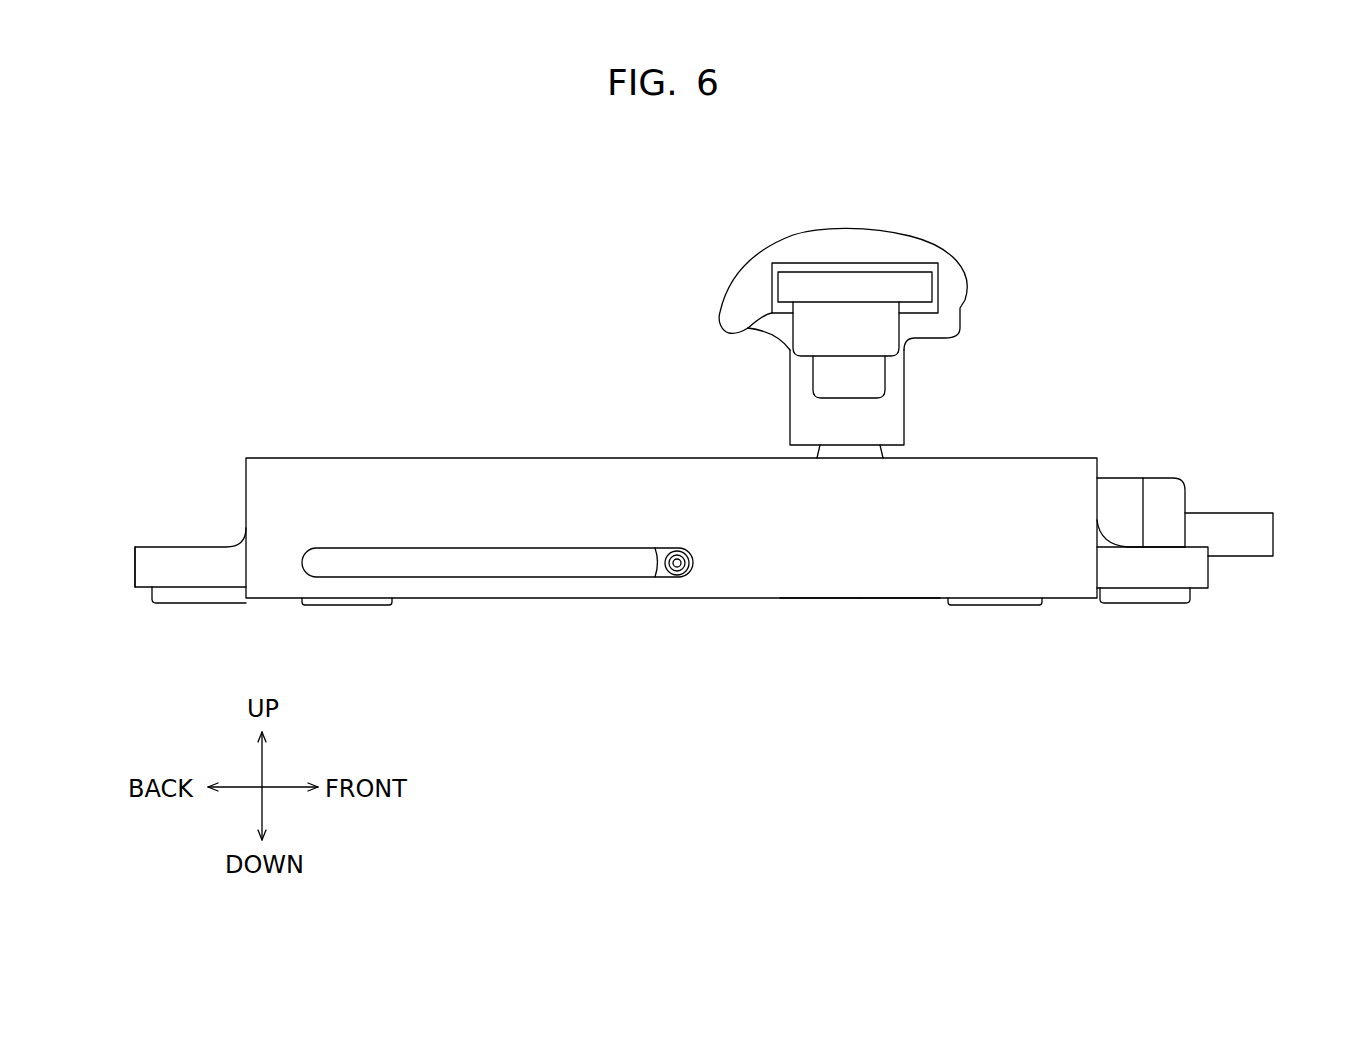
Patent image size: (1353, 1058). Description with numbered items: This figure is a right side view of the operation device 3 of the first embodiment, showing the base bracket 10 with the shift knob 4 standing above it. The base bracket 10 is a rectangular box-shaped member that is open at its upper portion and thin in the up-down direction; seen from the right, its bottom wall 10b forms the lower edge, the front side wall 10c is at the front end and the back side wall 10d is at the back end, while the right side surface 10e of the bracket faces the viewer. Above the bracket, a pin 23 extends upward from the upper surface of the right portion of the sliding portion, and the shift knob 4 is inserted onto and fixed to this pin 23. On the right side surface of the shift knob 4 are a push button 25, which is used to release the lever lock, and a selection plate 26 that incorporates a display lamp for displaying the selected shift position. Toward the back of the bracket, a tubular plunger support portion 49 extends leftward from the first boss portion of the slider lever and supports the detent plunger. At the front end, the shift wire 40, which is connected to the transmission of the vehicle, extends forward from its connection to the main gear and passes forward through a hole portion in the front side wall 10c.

The work machine unit 3 is at (1125, 252).
The shift knob 4 is at (793, 235).
The base bracket 10 is at (292, 457).
The bottom wall 10b is at (887, 599).
The front side wall 10c is at (1098, 470).
The back side wall 10d is at (246, 486).
The side surface of housing 10e is at (823, 552).
The pin 23 is at (885, 452).
The push button 25 is at (813, 342).
The selection plate 26 is at (876, 285).
The shift wire 40 is at (1232, 560).
The plunger support portion 49 is at (676, 574).